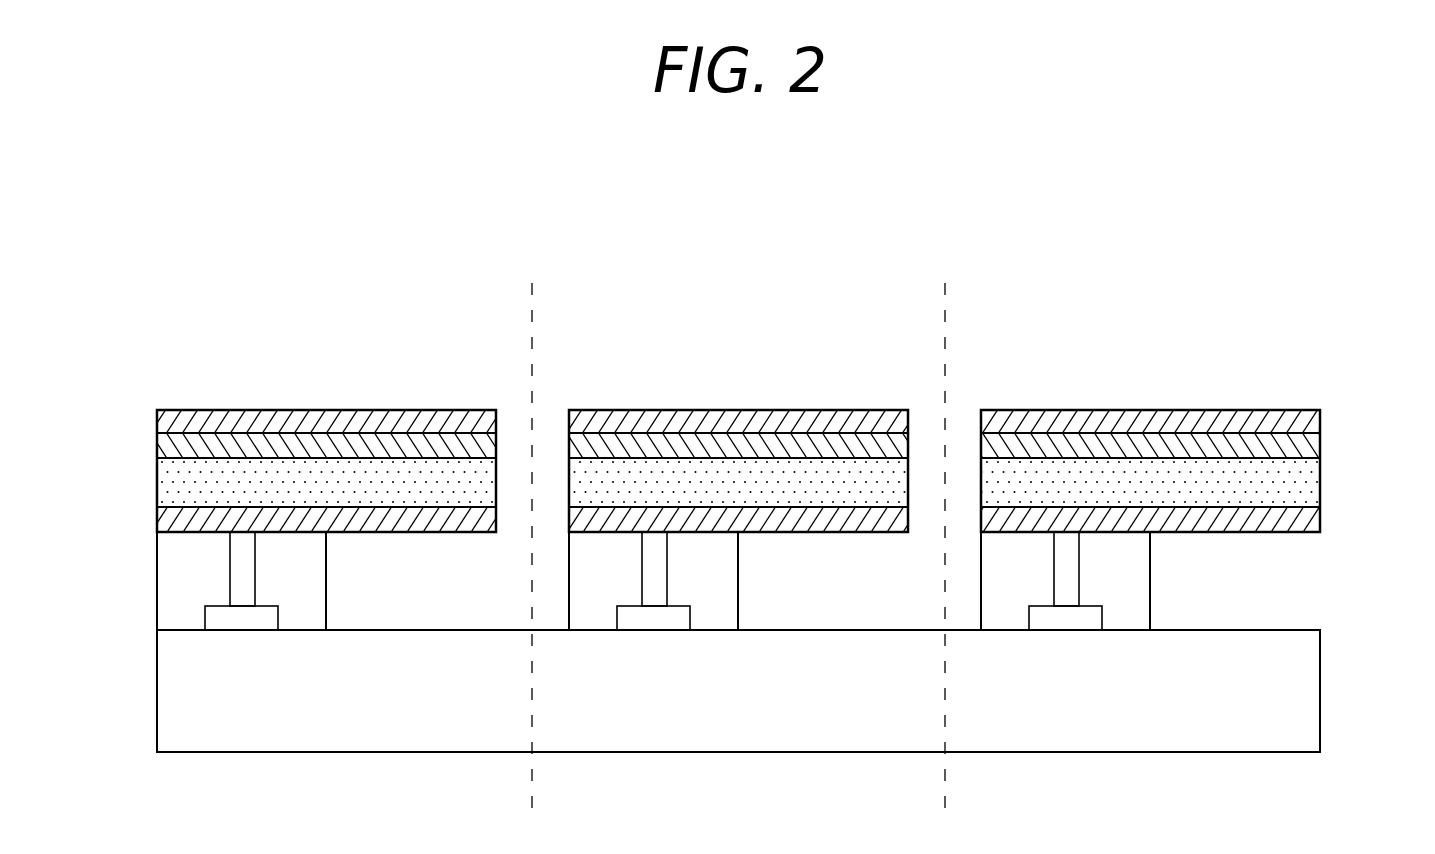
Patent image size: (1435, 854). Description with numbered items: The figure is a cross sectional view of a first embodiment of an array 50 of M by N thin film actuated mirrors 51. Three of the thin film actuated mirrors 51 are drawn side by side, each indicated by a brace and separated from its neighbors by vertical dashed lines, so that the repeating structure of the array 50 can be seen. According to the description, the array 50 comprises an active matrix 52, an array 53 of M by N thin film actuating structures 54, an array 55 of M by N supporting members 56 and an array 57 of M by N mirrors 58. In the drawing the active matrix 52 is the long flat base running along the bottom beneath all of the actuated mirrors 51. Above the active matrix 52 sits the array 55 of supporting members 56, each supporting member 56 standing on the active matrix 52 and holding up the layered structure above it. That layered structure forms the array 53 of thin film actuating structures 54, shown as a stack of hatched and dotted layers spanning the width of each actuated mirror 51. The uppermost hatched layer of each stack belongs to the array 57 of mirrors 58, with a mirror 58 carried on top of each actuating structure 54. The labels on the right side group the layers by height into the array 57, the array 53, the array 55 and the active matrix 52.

The array of thin film actuated mirrors 50 is at (1108, 219).
The thin film actuated mirror 51 is at (158, 317).
The active matrix 52 is at (1356, 629).
The array of thin film actuating structures 53 is at (1356, 435).
The thin film actuating structure 54 is at (457, 484).
The array of supporting members 55 is at (1356, 529).
The supporting member 56 is at (312, 561).
The array of mirrors 57 is at (1356, 407).
The mirror 58 is at (456, 416).